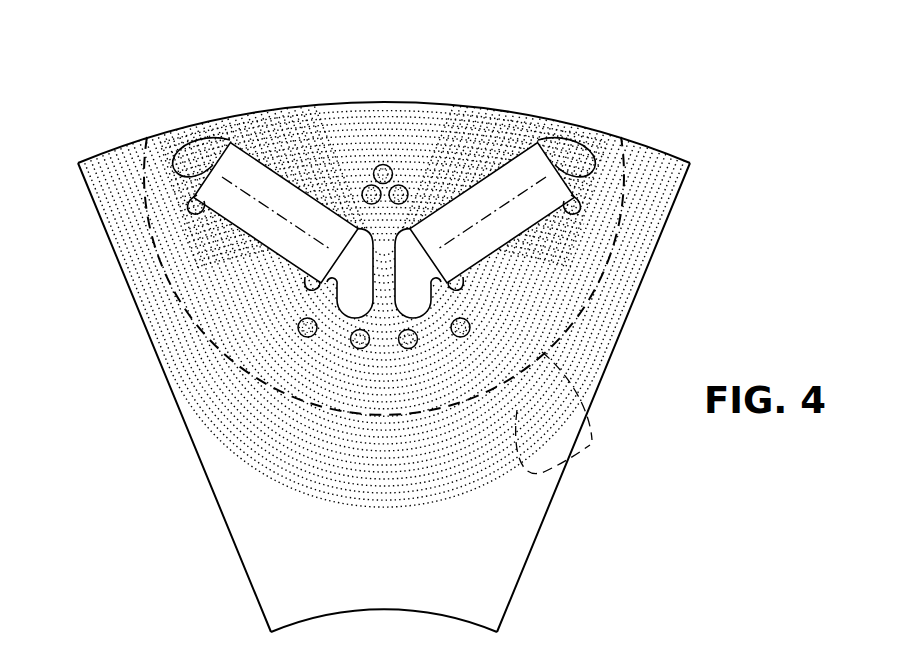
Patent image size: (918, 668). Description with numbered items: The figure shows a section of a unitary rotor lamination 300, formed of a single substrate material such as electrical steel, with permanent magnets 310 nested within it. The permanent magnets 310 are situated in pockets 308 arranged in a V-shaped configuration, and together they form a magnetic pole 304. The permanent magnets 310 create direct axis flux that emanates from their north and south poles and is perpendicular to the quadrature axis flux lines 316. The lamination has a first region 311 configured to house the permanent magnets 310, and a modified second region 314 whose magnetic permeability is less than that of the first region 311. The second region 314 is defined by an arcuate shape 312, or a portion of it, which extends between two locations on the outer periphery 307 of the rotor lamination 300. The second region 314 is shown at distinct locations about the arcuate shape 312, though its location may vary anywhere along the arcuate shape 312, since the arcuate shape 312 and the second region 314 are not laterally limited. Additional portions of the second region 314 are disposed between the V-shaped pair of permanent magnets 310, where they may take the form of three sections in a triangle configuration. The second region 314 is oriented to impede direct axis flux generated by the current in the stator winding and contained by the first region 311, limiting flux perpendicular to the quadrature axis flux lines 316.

The rotor lamination 300 is at (606, 50).
The magnetic pole 304 is at (425, 88).
The outer periphery 307 is at (92, 157).
The pockets 308 is at (198, 158).
The permanent magnets 310 is at (285, 176).
The first region 311 is at (282, 587).
The arcuate shape 312 is at (616, 148).
The second region 314 is at (403, 186).
The quadrature axis flux lines 316 is at (592, 440).